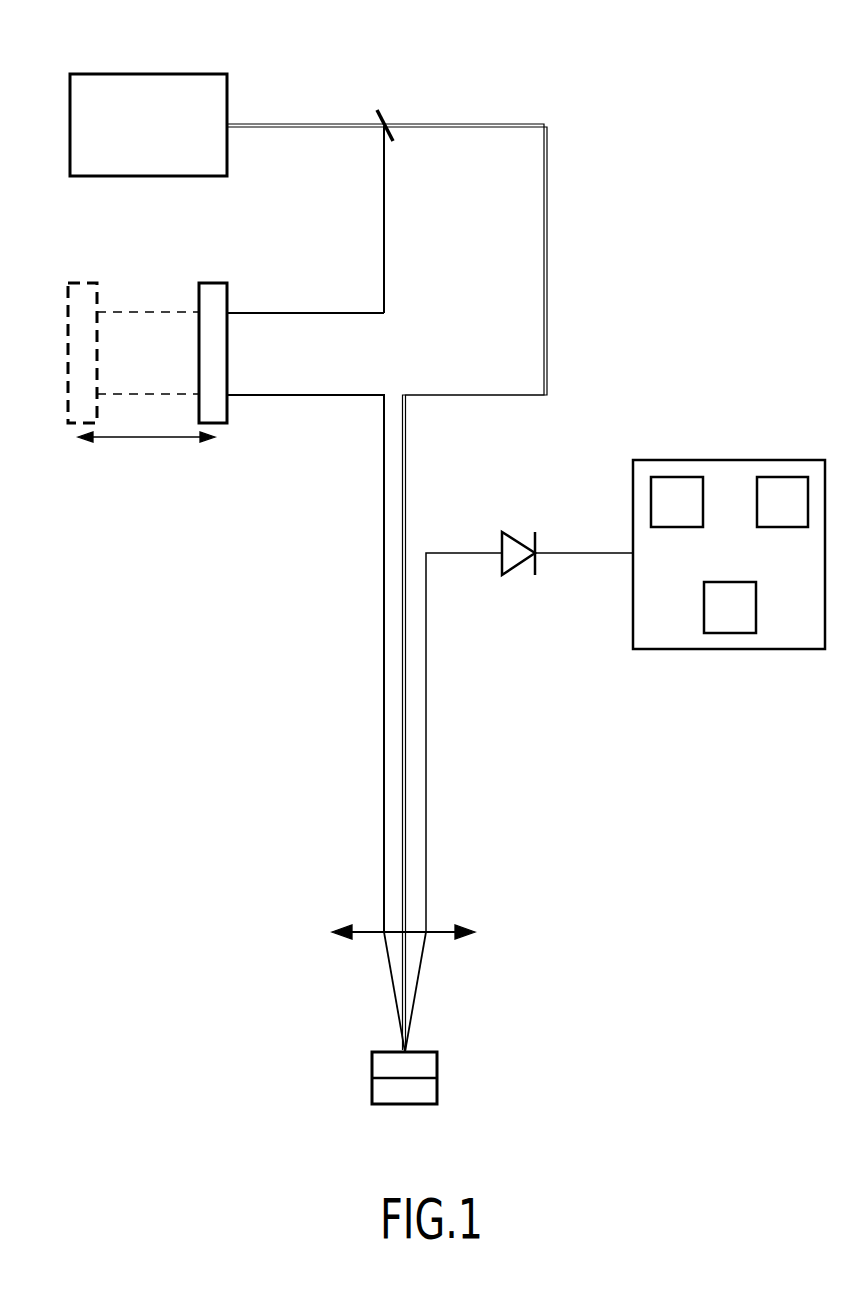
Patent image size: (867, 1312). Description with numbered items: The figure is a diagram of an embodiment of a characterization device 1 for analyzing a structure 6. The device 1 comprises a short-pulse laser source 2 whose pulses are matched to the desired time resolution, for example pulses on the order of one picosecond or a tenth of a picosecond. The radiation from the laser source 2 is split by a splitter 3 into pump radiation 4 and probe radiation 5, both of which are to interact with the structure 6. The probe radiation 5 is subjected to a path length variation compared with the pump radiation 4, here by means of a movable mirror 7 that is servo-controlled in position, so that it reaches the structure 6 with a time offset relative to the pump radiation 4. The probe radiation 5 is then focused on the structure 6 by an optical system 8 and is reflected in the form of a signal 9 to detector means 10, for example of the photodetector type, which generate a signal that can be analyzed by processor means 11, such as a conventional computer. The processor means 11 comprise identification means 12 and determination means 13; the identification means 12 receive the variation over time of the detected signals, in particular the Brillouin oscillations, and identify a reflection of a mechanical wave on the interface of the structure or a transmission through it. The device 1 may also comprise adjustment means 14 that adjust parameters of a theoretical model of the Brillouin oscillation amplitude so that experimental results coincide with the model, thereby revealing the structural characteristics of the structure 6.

The characterization device 1 is at (693, 80).
The short-pulse laser source 2 is at (148, 125).
The splitter 3 is at (384, 110).
The pump radiation 4 is at (548, 259).
The probe radiation 5 is at (386, 218).
The structure 6 is at (400, 1105).
The movable mirror 7 is at (210, 283).
The optical system 8 is at (372, 930).
The signal 9 is at (462, 552).
The detector means 10 is at (514, 540).
The processor means 11 is at (729, 527).
The identification means 12 is at (677, 502).
The determination means 13 is at (782, 502).
The adjustment means 14 is at (730, 607).